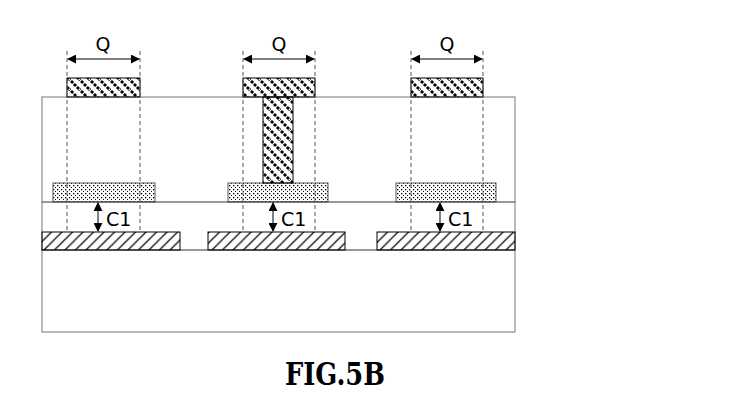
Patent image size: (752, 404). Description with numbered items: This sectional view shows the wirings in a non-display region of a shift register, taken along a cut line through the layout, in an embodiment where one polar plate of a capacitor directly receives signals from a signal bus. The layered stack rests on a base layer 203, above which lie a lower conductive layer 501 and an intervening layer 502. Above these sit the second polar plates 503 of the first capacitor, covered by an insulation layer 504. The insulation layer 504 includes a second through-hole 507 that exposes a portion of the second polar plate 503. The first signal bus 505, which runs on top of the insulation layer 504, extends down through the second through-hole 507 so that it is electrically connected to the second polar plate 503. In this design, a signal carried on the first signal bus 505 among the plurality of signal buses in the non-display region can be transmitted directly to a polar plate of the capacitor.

The substrate 203 is at (482, 322).
The first electrode layer 501 is at (517, 238).
The dielectric layer 502 is at (488, 219).
The second polar plate of the first capacitor 503 is at (500, 186).
The insulation layer 504 is at (490, 147).
The first signal bus 505 is at (465, 78).
The second through-hole 507 is at (278, 143).